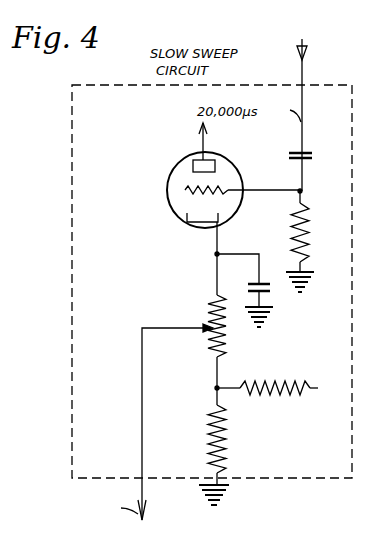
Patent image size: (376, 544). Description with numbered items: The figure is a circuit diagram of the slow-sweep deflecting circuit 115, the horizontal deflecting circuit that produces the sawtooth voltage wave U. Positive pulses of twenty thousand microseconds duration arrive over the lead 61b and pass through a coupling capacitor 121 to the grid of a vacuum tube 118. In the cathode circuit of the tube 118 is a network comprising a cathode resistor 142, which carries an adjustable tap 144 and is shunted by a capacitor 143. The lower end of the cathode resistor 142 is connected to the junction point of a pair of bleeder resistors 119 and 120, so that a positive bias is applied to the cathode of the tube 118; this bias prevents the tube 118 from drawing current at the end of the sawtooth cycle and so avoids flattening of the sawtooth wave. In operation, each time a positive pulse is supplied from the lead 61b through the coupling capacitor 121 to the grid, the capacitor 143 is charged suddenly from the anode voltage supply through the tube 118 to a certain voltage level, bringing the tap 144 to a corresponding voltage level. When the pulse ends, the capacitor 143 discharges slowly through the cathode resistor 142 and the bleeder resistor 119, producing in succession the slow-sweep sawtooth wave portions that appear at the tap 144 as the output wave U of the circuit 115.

The slow-sweep deflecting circuit 115 is at (72, 186).
The lead 61b is at (304, 67).
The coupling capacitor 121 is at (304, 152).
The vacuum tube 118 is at (168, 176).
The capacitor 143 is at (258, 282).
The cathode resistor 142 is at (215, 292).
The adjustable tap 144 is at (206, 332).
The bleeder resistor 119 is at (209, 429).
The bleeder resistor 120 is at (284, 392).